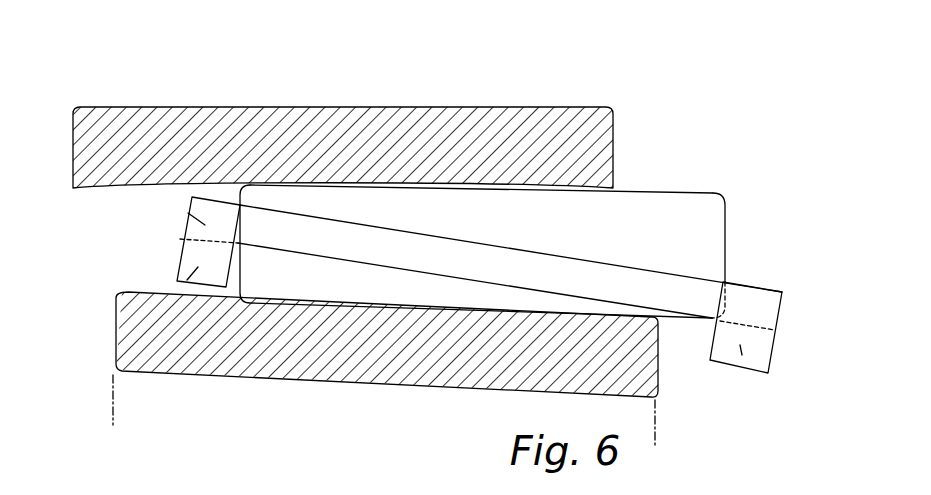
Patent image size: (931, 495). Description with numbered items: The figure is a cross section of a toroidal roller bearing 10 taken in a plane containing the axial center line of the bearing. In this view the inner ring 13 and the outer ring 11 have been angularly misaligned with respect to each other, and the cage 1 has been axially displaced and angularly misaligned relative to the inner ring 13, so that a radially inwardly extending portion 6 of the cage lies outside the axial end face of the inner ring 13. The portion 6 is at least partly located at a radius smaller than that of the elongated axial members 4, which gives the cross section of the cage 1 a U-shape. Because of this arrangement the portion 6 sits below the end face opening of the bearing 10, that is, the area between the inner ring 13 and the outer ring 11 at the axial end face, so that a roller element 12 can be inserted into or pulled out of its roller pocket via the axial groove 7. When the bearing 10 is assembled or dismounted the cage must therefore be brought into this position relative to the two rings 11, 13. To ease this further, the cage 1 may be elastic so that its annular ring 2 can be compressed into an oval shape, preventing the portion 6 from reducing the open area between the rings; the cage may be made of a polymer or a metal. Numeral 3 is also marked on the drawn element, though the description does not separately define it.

The cage 1 is at (698, 240).
The annular ring 2 is at (777, 339).
The first support element 3 is at (178, 245).
The elongated axial members 4 is at (617, 280).
The portion 6 is at (187, 280).
The axial groove 7 is at (187, 212).
The toroidal roller bearing 10 is at (217, 86).
The outer ring 11 is at (142, 107).
The roller element 12 is at (403, 200).
The inner ring 13 is at (298, 358).